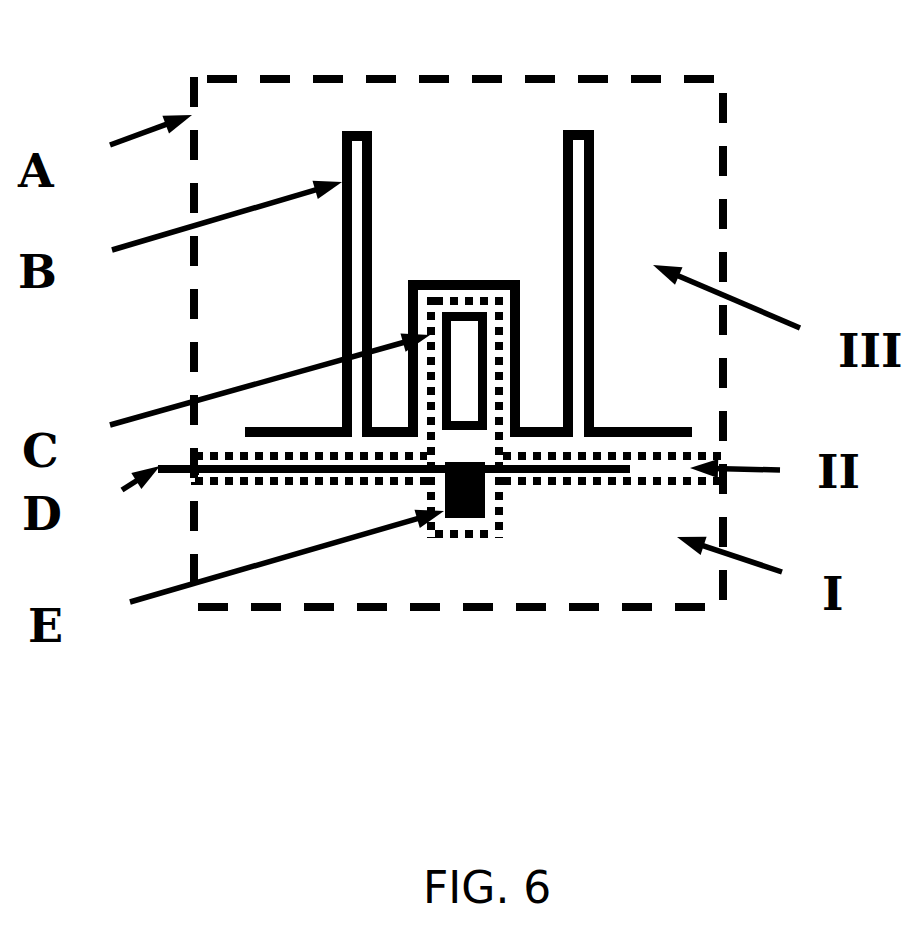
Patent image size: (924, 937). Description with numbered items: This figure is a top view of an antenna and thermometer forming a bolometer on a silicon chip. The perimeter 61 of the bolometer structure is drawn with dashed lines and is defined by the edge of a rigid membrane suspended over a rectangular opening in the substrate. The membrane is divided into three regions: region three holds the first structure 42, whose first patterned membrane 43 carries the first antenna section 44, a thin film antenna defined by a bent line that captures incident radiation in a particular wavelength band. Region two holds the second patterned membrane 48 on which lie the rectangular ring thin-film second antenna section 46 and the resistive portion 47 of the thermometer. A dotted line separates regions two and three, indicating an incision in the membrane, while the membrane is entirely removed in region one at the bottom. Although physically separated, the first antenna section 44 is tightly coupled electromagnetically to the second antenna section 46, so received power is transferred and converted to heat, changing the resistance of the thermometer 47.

The perimeter 61 is at (210, 73).
The first patterned membrane 43 is at (670, 157).
The first structure 42 is at (874, 232).
The first antenna section 44 is at (372, 214).
The second antenna section 46 is at (458, 343).
The second patterned membrane 48 is at (665, 467).
The resistive portion of a thermometer 47 is at (468, 518).